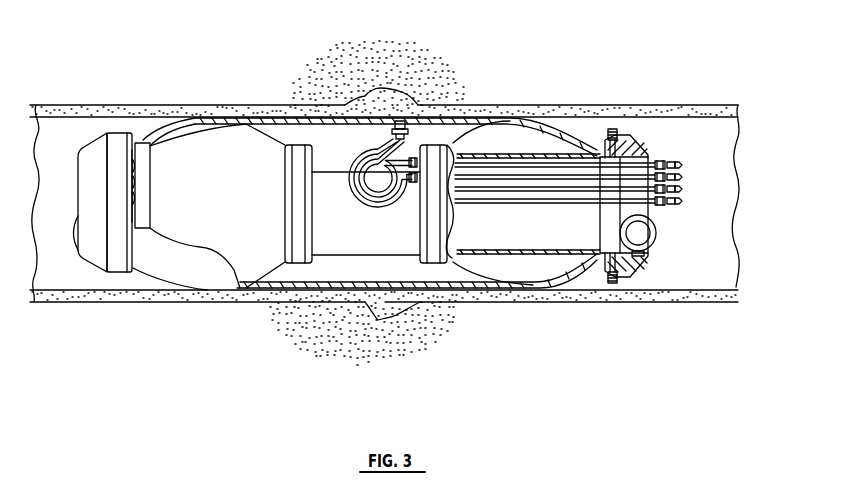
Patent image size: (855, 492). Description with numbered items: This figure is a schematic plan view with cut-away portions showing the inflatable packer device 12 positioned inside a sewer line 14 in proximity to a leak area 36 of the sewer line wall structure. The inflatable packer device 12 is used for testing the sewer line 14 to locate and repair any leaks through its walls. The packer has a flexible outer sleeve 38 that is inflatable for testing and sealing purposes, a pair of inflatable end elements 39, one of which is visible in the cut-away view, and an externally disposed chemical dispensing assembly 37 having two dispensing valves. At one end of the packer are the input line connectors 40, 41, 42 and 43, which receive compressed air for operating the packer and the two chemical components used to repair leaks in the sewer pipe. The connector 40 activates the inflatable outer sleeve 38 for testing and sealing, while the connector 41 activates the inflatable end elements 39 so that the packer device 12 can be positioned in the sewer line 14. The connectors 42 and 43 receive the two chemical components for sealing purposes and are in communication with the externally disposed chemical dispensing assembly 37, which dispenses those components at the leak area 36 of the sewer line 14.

The inflatable packer device 12 is at (154, 122).
The sewer line 14 is at (73, 282).
The leak area 36 is at (393, 108).
The chemical dispensing assembly 37 is at (408, 124).
The flexible outer sleeve 38 is at (515, 121).
The inflatable end elements 39 is at (562, 132).
The input line connector 40 is at (664, 162).
The input line connector 41 is at (682, 176).
The input line connector 42 is at (682, 188).
The input line connector 43 is at (665, 205).